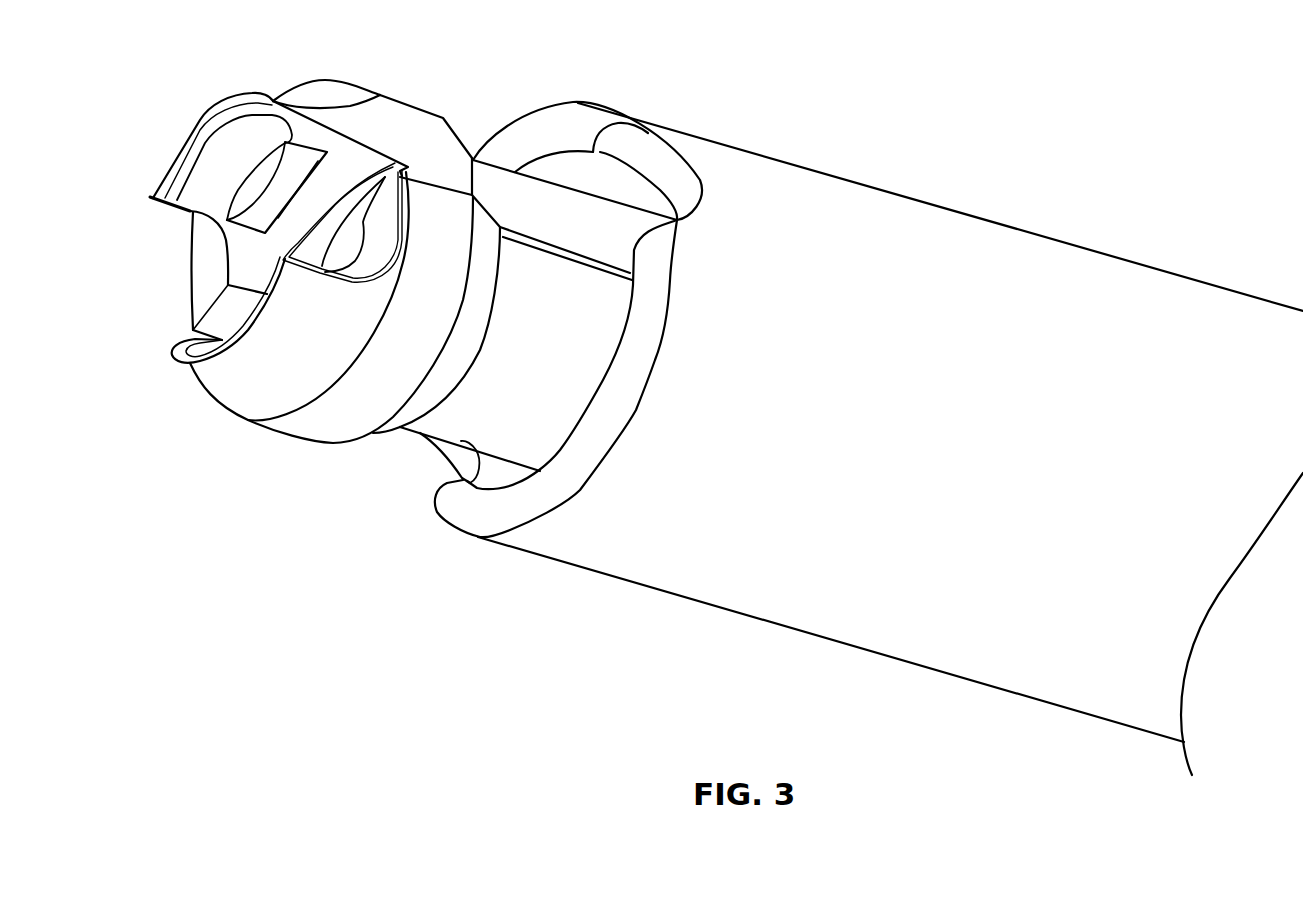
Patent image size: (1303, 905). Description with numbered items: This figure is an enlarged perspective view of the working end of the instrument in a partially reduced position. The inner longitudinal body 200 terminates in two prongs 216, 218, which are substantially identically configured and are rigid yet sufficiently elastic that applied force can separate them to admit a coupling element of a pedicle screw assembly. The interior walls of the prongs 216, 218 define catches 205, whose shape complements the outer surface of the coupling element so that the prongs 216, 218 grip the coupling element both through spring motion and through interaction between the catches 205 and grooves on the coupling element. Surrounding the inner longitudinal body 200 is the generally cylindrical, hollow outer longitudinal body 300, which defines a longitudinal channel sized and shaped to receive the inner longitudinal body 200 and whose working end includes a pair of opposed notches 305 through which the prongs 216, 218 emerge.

The inner longitudinal body 200 is at (487, 430).
The catches 205 is at (277, 197).
The prong 216 is at (379, 114).
The prong 218 is at (242, 392).
The outer longitudinal body 300 is at (807, 166).
The notches 305 is at (637, 148).